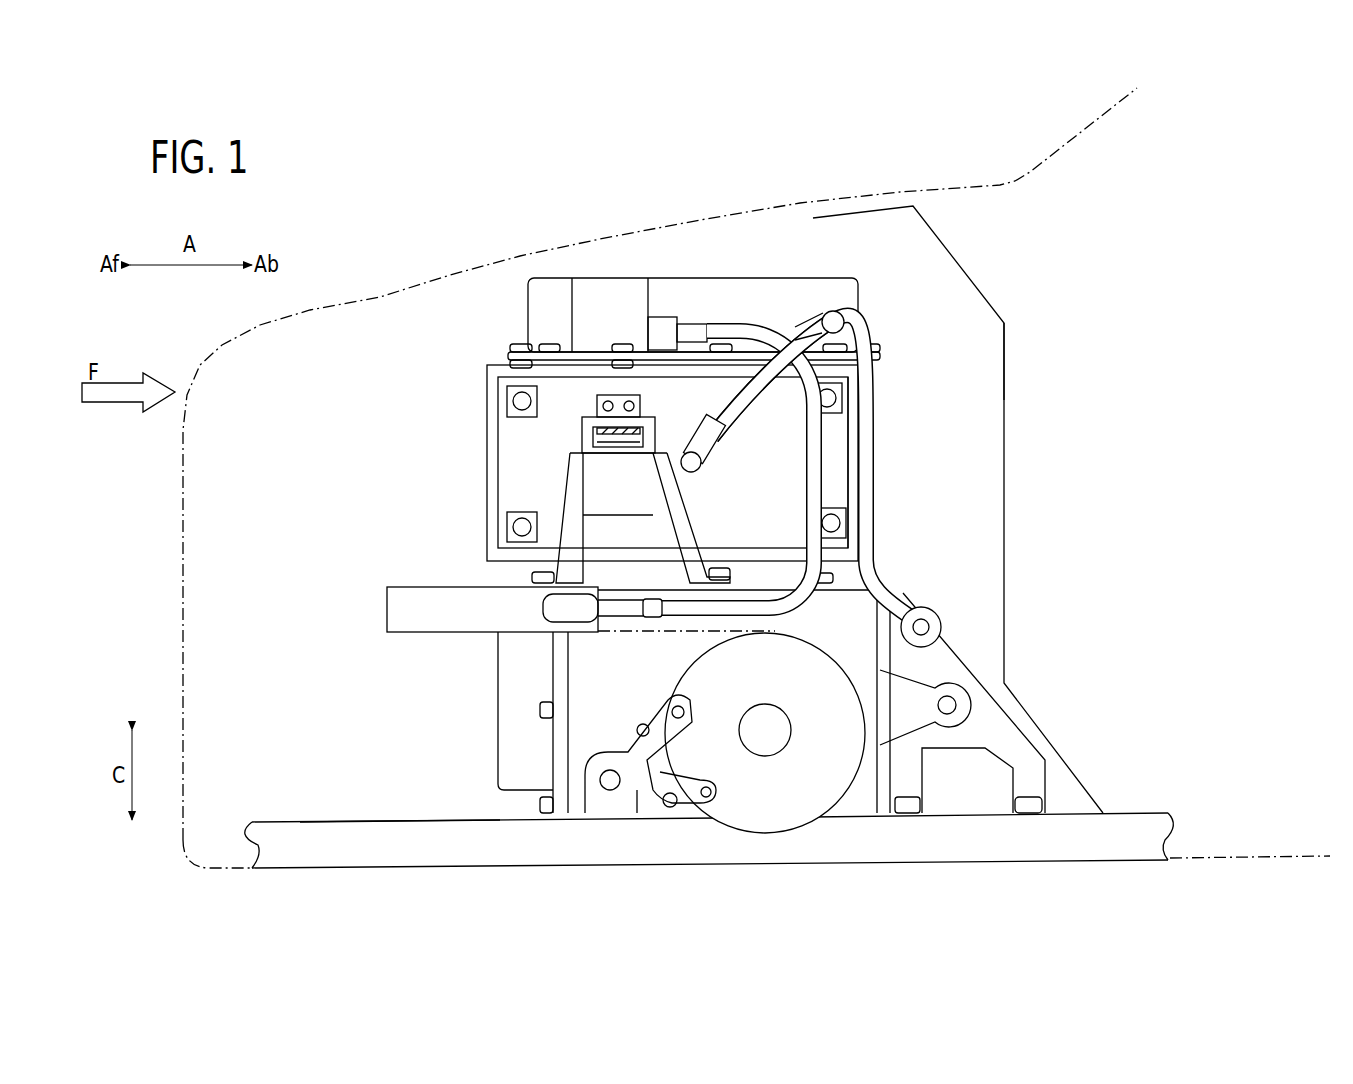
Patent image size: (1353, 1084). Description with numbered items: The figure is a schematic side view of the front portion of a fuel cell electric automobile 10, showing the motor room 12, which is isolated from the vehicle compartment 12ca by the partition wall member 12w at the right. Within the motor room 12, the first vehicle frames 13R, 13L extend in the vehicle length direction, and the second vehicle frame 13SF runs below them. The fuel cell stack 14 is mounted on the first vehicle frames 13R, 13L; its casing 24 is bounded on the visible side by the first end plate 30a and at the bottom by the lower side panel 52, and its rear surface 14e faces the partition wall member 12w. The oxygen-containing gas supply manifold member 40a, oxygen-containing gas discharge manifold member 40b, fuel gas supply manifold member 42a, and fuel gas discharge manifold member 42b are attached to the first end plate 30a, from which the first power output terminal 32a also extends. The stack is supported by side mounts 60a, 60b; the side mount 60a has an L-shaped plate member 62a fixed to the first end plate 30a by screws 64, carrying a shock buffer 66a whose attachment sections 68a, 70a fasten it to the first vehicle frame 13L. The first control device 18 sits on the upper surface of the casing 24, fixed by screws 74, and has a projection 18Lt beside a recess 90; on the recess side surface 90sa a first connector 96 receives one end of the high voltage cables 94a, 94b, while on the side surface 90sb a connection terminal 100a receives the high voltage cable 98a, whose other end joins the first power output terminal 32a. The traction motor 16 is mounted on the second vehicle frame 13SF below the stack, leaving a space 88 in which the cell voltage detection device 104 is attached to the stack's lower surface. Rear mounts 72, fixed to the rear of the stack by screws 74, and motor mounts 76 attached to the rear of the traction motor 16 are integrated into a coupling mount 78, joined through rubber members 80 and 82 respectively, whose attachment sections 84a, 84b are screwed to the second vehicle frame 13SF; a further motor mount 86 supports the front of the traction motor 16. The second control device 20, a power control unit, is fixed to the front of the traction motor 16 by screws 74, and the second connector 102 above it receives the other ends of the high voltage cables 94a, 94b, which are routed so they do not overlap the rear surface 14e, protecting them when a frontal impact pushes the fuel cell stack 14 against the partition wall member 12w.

The fuel cell electric automobile 10 is at (722, 172).
The motor room 12 is at (415, 296).
The partition wall member 12w is at (1005, 441).
The vehicle compartment 12ca is at (1018, 369).
The first vehicle frame 13L is at (440, 634).
The first vehicle frame 13R is at (492, 636).
The second vehicle frame 13SF is at (380, 822).
The fuel cell stack 14 is at (570, 350).
The rear surface 14e is at (852, 500).
The traction motor 16 is at (722, 824).
The first control device 18 is at (598, 276).
The projection 18Lt is at (530, 300).
The second control device 20 is at (497, 733).
The casing 24 is at (485, 465).
The first end plate 30a is at (508, 474).
The first power output terminal 32a is at (702, 461).
The oxygen-containing gas supply manifold member 40a is at (843, 396).
The oxygen-containing gas discharge manifold member 40b is at (506, 527).
The fuel gas supply manifold member 42a is at (846, 525).
The fuel gas discharge manifold member 42b is at (506, 400).
The lower side panel 52 is at (777, 567).
The side mount 60a is at (572, 486).
The side mount 60b is at (572, 486).
The plate member 62a is at (617, 425).
The screws 64 is at (641, 407).
The shock buffer 66a is at (637, 490).
The attachment section 68a is at (687, 542).
The attachment section 70a is at (577, 538).
The rear mount 72 is at (906, 586).
The screws 74 is at (508, 348).
The motor mount 76 is at (895, 720).
The coupling mount 78 is at (967, 672).
The rubber member 80 is at (942, 623).
The rubber member 82 is at (978, 705).
The attachment section 84a is at (913, 773).
The attachment section 84b is at (1033, 773).
The motor mount 86 is at (630, 752).
The space 88 is at (623, 592).
The recess 90 is at (780, 435).
The side surface 90sa is at (650, 295).
The side surface 90sb is at (775, 310).
The high voltage cable 94a is at (866, 460).
The high voltage cable 94b is at (808, 453).
The first connector 96 is at (668, 340).
The high voltage cable 98a is at (722, 409).
The connection terminal 100a is at (850, 330).
The second connector 102 is at (650, 619).
The cell voltage detection device 104 is at (772, 618).